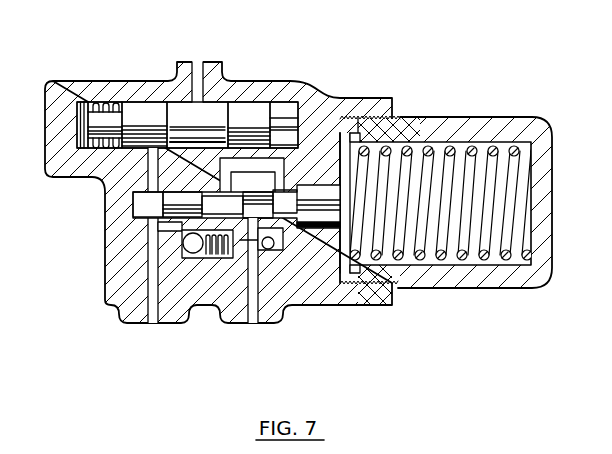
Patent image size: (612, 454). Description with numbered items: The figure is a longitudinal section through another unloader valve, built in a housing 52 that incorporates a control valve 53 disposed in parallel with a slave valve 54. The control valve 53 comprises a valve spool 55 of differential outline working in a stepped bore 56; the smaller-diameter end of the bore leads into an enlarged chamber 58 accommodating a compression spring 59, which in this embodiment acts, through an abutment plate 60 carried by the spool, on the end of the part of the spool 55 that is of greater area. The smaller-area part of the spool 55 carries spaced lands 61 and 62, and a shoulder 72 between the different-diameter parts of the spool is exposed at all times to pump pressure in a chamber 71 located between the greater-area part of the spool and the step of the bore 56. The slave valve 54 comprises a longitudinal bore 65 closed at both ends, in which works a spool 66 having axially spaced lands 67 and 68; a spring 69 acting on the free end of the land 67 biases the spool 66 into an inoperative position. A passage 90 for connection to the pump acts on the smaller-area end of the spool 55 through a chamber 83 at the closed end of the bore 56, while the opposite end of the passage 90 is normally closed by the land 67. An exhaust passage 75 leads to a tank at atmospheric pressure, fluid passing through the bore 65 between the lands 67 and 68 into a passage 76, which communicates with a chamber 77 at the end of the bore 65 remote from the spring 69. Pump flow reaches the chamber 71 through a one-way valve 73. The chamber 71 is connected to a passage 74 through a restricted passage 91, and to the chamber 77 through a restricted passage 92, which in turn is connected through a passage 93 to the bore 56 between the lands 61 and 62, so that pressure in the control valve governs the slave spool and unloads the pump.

The housing 52 is at (312, 105).
The control valve 53 is at (176, 196).
The slave valve 54 is at (153, 110).
The valve spool 55 is at (205, 258).
The stepped bore 56 is at (133, 205).
The enlarged chamber 58 is at (458, 143).
The compression spring 59 is at (470, 150).
The abutment plate 60 is at (382, 288).
The land 61 is at (285, 200).
The land 62 is at (153, 226).
The longitudinal bore 65 is at (103, 103).
The spool 66 is at (186, 115).
The land 67 is at (133, 113).
The land 68 is at (247, 113).
The spring 69 is at (84, 103).
The chamber 71 is at (350, 133).
The shoulder 72 is at (306, 228).
The one-way valve 73 is at (194, 254).
The passage 74 is at (253, 300).
The exhaust passage 75 is at (196, 76).
The passage 76 is at (197, 161).
The chamber 77 is at (285, 110).
The chamber 83 is at (170, 208).
The passage 90 is at (148, 312).
The restricted passage 91 is at (273, 230).
The restricted passage 92 is at (348, 117).
The passage 93 is at (255, 165).